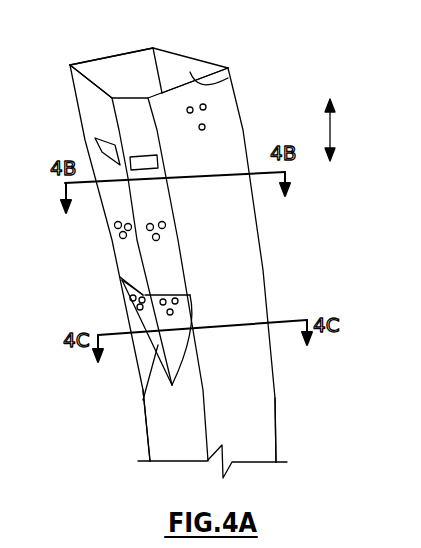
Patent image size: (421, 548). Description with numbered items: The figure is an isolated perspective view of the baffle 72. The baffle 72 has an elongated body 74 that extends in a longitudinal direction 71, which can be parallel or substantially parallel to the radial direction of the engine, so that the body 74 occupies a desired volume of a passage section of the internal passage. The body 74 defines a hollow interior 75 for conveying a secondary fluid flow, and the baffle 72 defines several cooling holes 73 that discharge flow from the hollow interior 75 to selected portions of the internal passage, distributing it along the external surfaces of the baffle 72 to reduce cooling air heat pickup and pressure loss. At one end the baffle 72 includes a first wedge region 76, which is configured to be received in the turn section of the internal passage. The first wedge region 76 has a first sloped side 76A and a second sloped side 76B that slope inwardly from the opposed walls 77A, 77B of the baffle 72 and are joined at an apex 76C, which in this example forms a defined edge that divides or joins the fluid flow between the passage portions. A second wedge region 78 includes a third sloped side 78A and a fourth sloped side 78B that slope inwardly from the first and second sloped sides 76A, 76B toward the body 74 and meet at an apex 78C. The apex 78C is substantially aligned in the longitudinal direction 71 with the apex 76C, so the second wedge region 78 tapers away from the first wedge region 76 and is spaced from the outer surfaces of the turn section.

The longitudinal direction 71 is at (332, 130).
The baffle 72 is at (204, 54).
The cooling holes 73 is at (207, 108).
The body 74 is at (282, 391).
The hollow interior 75 is at (176, 58).
The first wedge region 76 is at (76, 115).
The first sloped side 76A is at (145, 210).
The second sloped side 76B is at (125, 243).
The apex 76C is at (140, 268).
The opposed wall 77A is at (232, 69).
The opposed wall 77B is at (113, 56).
The second wedge region 78 is at (141, 357).
The third sloped side 78A is at (180, 322).
The fourth sloped side 78B is at (133, 290).
The apex 78C is at (145, 396).